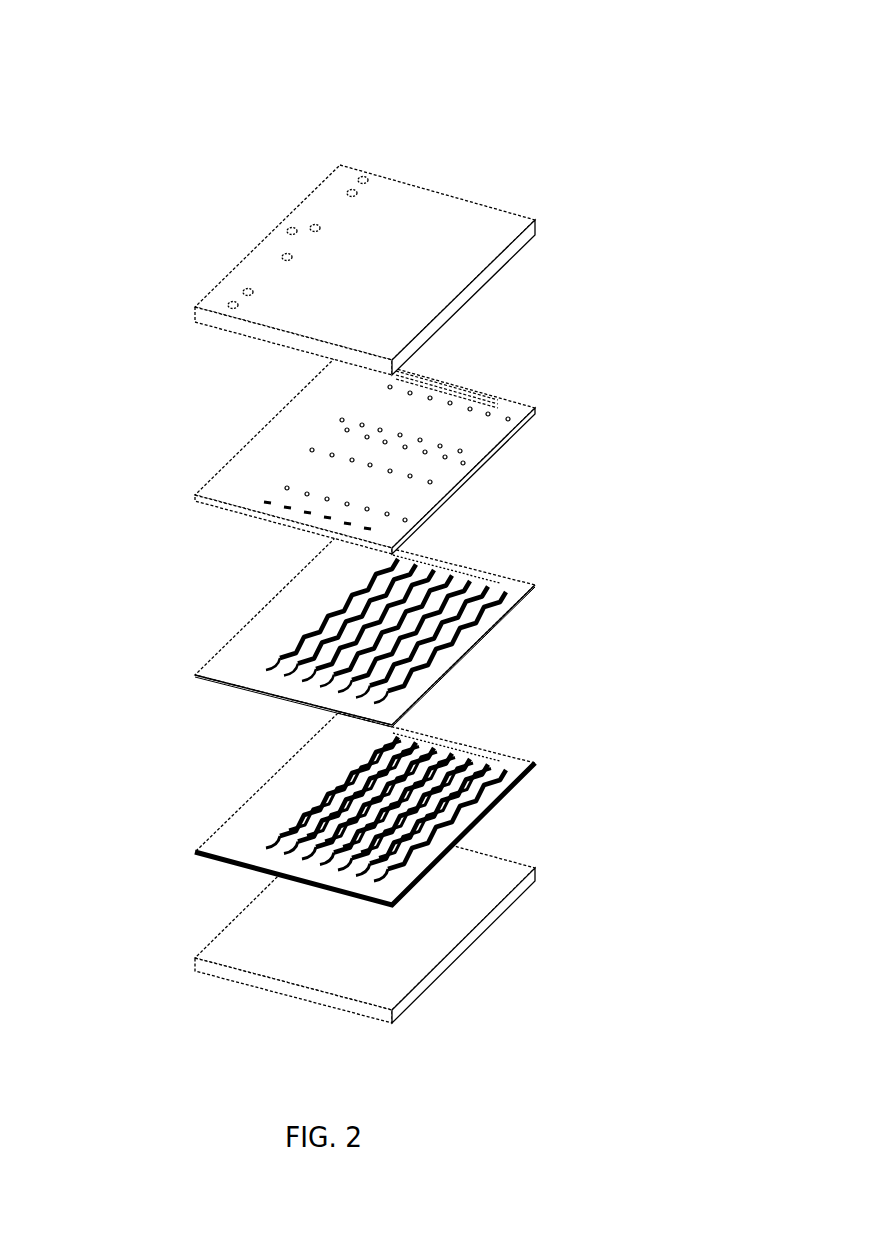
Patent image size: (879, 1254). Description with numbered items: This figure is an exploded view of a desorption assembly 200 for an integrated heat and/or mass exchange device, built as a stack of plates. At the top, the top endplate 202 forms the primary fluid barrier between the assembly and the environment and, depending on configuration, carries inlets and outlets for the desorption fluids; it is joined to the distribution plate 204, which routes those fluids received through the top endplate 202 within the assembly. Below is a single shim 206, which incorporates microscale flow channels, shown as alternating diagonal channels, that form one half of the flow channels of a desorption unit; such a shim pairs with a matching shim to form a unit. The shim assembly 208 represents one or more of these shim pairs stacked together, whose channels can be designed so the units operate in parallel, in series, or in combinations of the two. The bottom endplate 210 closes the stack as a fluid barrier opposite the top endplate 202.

The desorption assembly 200 is at (407, 88).
The top endplate 202 is at (270, 272).
The distribution plate 204 is at (242, 467).
The shim 206 is at (213, 660).
The shim assembly 208 is at (268, 790).
The bottom endplate 210 is at (242, 943).